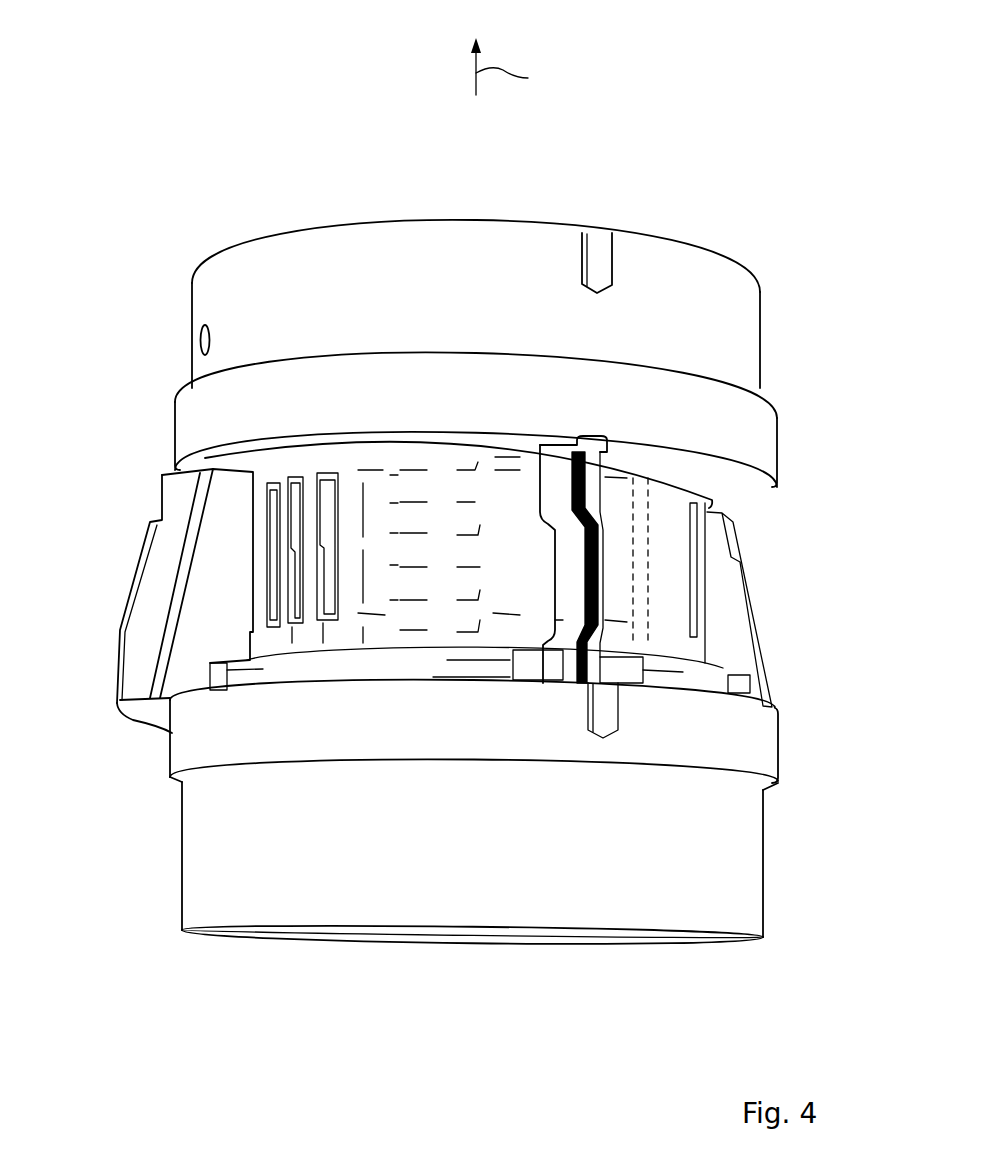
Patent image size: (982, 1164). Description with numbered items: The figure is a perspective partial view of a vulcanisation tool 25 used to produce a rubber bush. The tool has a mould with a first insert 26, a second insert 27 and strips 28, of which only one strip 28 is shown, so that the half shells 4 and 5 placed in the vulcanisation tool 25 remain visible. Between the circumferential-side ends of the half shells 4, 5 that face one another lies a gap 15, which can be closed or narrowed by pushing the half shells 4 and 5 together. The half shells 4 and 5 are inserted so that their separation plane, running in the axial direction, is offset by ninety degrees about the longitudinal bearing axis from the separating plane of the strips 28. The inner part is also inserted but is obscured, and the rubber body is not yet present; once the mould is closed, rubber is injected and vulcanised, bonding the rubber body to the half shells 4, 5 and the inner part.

The vulcanisation tool 25 is at (177, 118).
The first insert 26 is at (493, 245).
The second insert 27 is at (238, 912).
The strip 28 is at (150, 548).
The gap 15 is at (561, 482).
The half shell 4 is at (658, 588).
The half shell 5 is at (430, 617).